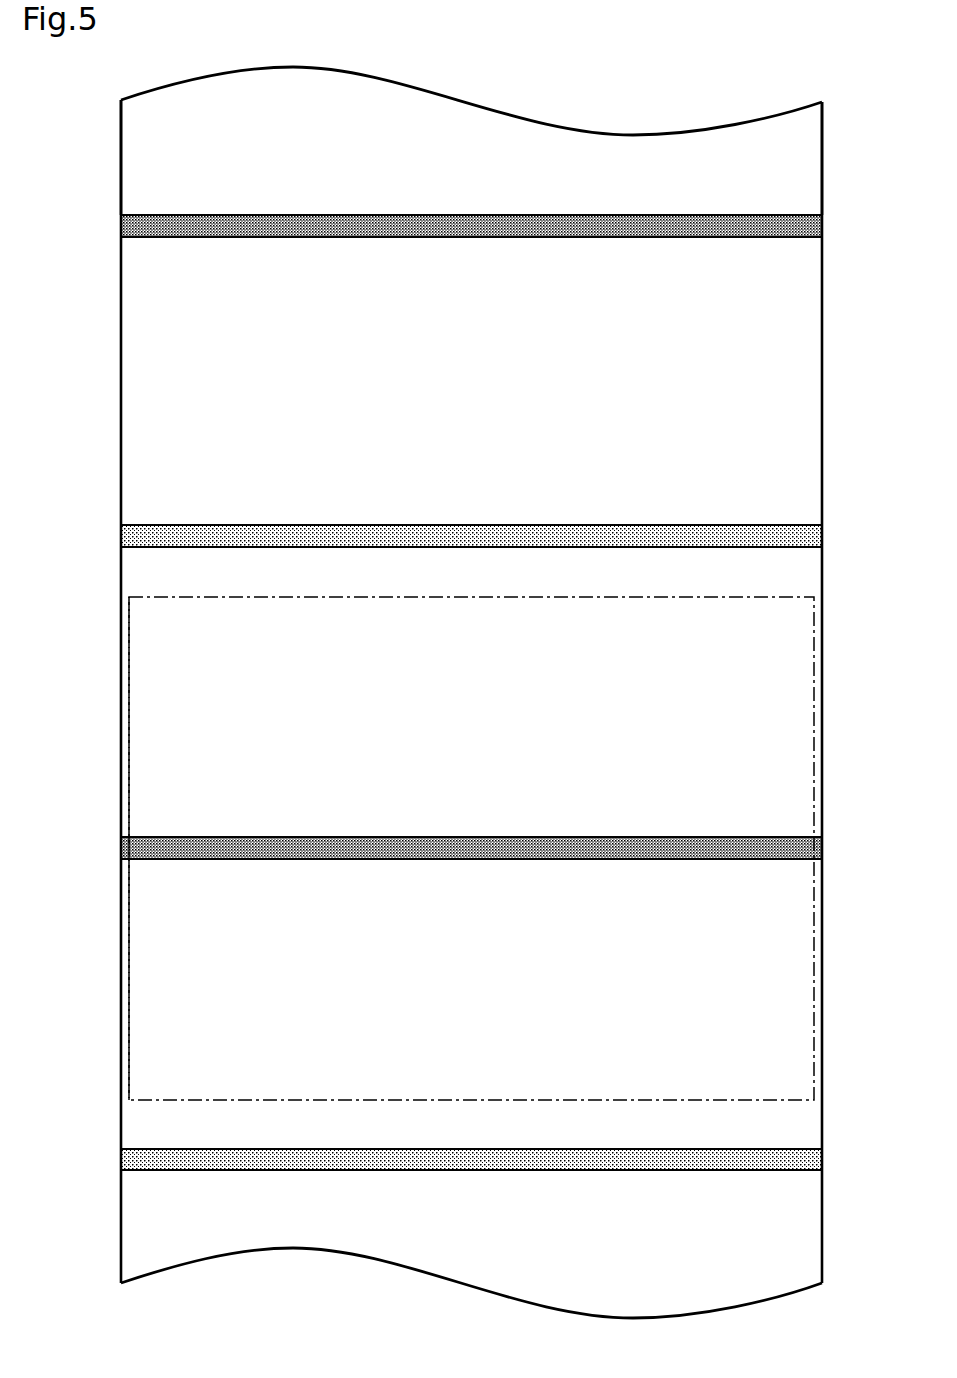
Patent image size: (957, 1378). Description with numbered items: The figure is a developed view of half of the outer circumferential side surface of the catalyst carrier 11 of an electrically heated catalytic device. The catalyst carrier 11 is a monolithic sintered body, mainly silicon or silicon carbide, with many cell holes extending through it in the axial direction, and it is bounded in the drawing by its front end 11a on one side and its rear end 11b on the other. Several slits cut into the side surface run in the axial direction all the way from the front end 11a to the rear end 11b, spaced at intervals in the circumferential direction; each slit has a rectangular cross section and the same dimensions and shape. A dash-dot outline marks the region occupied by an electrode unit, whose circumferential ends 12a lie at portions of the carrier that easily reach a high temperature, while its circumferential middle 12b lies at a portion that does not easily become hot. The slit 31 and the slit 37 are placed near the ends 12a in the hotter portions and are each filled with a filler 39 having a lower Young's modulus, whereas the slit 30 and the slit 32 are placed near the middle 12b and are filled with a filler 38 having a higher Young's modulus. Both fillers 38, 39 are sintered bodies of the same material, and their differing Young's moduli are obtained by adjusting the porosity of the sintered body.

The catalyst carrier 11 is at (121, 328).
The front end 11a is at (121, 153).
The rear end 11b is at (822, 163).
The ends 12a is at (146, 597).
The middle 12b is at (122, 828).
The slit 30 is at (488, 837).
The slit 31 is at (488, 525).
The slit 32 is at (442, 238).
The slit 37 is at (440, 1170).
The filler 38 is at (294, 238).
The filler 39 is at (330, 525).